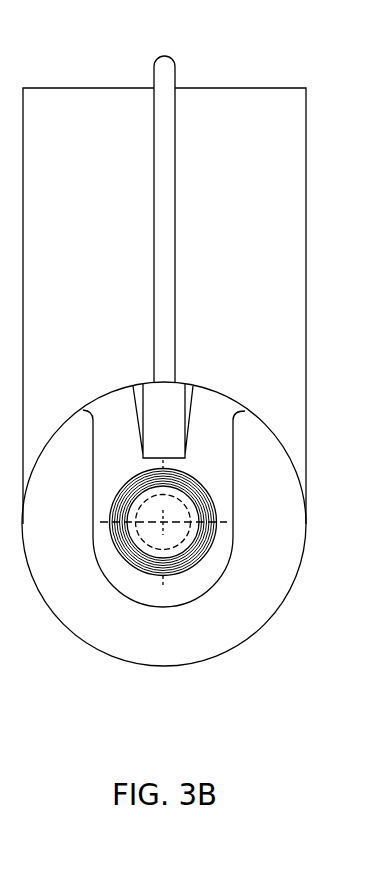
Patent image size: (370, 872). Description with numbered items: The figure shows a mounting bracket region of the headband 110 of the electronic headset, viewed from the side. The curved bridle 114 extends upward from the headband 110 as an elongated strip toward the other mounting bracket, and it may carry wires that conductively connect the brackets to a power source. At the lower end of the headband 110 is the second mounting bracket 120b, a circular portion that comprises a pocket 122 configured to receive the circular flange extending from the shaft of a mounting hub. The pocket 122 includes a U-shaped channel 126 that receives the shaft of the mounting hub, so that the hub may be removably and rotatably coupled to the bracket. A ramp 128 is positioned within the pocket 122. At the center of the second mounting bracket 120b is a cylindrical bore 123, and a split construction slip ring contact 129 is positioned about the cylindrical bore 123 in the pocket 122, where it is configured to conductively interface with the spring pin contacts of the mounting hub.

The headband 110 is at (281, 107).
The curved bridle 114 is at (174, 82).
The second mounting bracket 120b is at (197, 645).
The pocket 122 is at (119, 426).
The cylindrical bore 123 is at (177, 527).
The U-shaped channel 126 is at (233, 437).
The ramp 128 is at (171, 408).
The split construction slip ring contact 129 is at (188, 553).